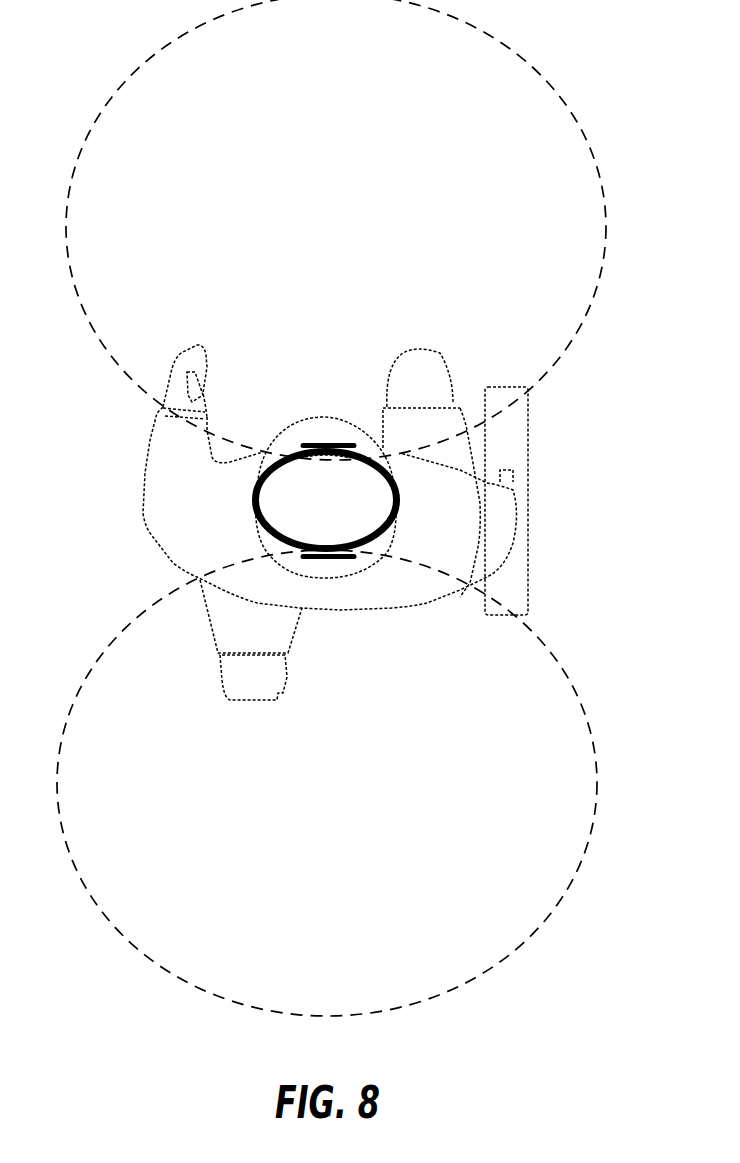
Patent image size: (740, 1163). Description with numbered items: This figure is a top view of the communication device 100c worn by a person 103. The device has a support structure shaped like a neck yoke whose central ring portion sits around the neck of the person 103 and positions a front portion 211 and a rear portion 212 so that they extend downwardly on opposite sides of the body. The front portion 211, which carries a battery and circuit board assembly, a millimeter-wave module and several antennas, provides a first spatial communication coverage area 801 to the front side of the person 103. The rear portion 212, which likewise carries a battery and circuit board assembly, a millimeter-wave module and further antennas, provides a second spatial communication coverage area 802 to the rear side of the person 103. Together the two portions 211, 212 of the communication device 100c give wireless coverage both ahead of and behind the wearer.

The first spatial communication coverage area 801 is at (353, 238).
The second spatial communication coverage area 802 is at (343, 798).
The front portion 211 is at (333, 440).
The rear portion 212 is at (327, 560).
The person 103 is at (147, 458).
The communication device 100c is at (252, 520).